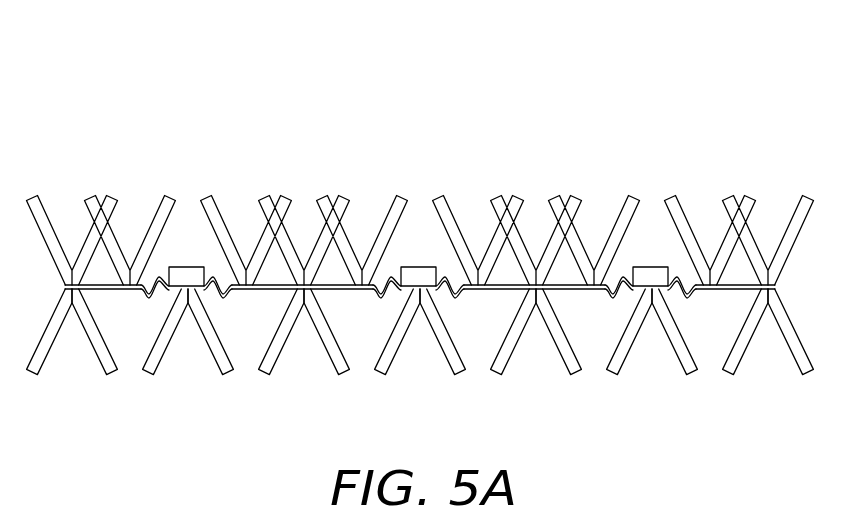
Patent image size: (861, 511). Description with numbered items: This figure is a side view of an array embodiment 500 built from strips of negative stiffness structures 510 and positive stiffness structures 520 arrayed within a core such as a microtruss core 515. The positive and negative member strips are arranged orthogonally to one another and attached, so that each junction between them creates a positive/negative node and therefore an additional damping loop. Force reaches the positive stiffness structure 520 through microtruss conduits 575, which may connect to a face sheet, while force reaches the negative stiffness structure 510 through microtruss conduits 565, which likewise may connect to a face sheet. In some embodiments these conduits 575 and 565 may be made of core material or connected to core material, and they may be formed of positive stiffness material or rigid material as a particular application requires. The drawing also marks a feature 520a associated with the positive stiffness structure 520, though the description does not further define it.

The array embodiment 500 is at (294, 163).
The negative stiffness structure 510 is at (185, 272).
The microtruss core 515 is at (62, 313).
The positive stiffness structure 520 is at (107, 292).
The undulating connector 520a is at (212, 297).
The microtruss conduits 565 is at (195, 313).
The microtruss conduits 575 is at (112, 258).